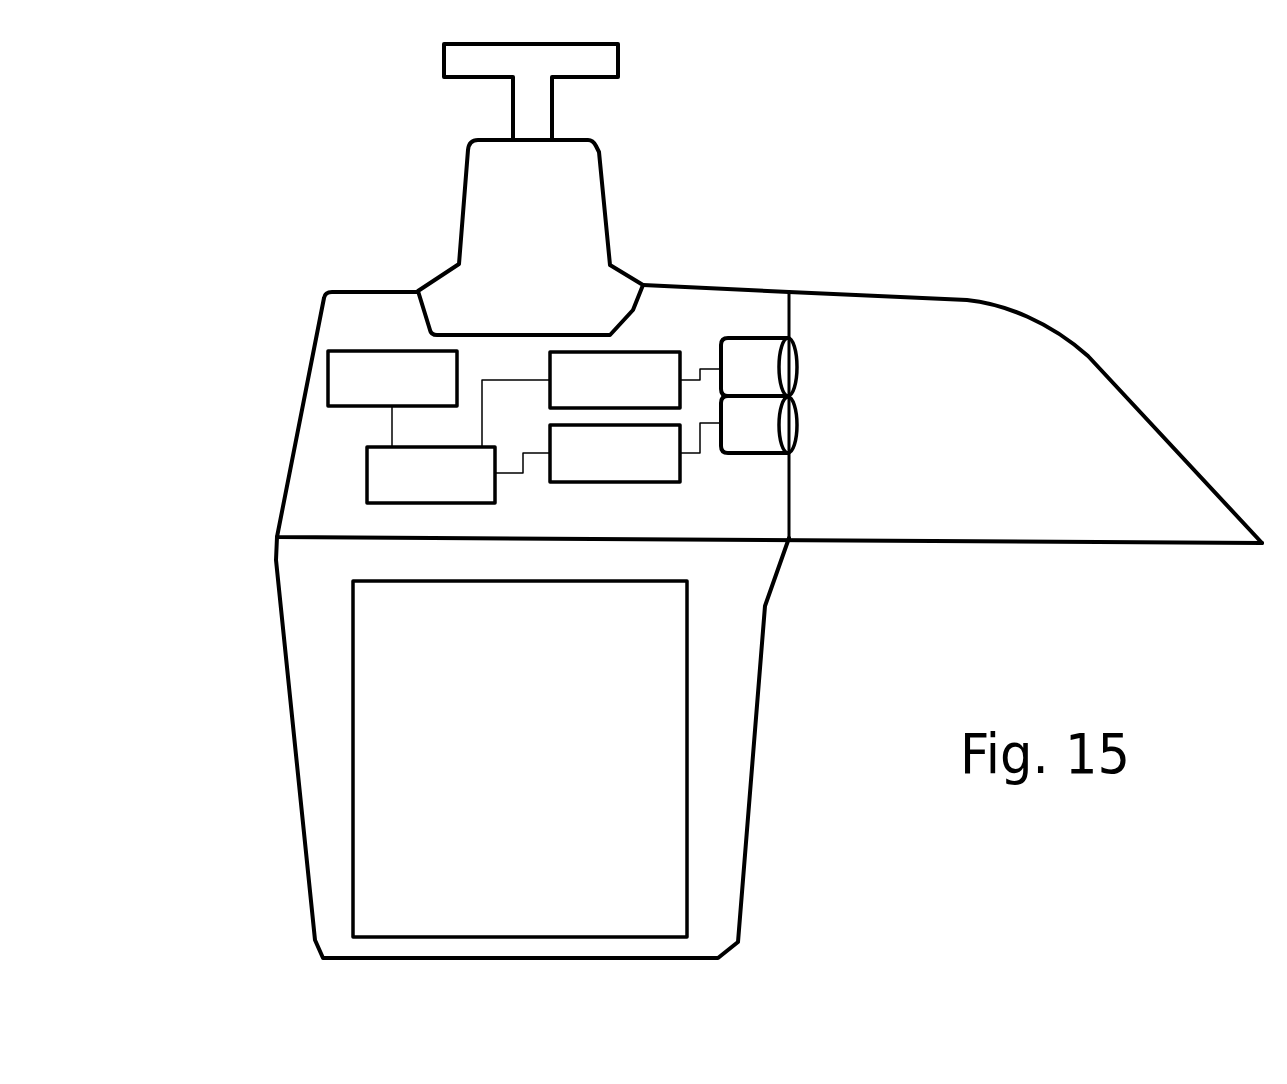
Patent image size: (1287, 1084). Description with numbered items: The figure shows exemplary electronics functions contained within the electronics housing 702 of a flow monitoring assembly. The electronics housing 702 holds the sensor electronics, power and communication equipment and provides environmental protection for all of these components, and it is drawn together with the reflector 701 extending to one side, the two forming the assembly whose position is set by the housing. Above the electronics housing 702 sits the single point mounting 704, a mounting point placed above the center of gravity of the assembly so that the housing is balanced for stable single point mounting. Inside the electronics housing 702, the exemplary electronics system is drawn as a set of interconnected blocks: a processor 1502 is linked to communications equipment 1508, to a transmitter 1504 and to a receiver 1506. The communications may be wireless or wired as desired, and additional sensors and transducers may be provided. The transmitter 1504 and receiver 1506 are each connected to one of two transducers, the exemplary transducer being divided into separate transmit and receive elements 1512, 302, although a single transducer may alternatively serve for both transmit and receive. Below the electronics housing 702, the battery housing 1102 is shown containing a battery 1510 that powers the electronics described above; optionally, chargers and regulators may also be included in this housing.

The reflector 701 is at (1083, 350).
The electronics housing 702 is at (318, 305).
The single point mounting 704 is at (460, 191).
The lower tank cylinder 302 is at (797, 433).
The upper tank cylinder 1512 is at (798, 368).
The battery housing 1102 is at (300, 785).
The processor 1502 is at (467, 492).
The transmitter 1504 is at (652, 472).
The receiver 1506 is at (652, 398).
The communications equipment 1508 is at (428, 397).
The battery 1510 is at (557, 777).